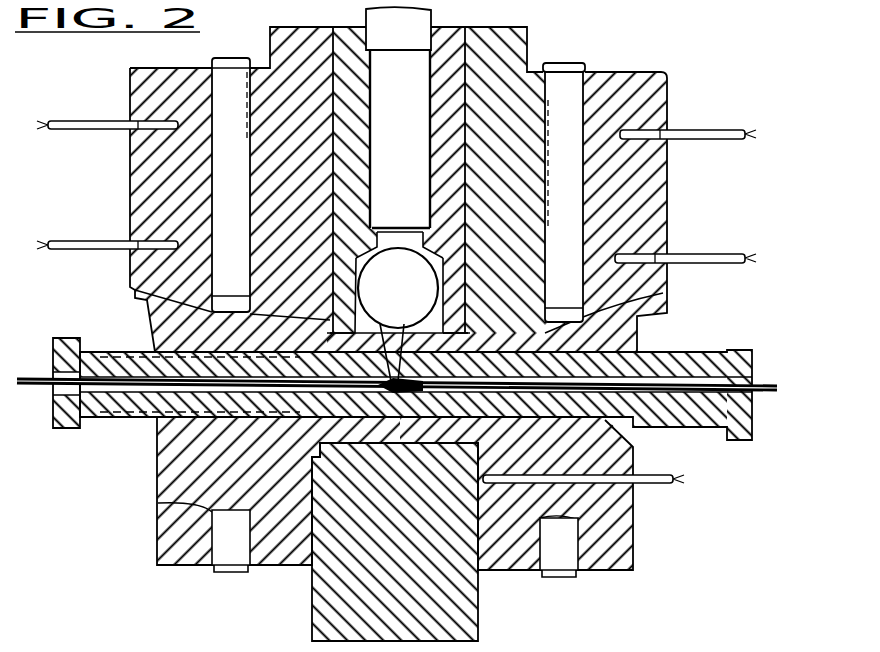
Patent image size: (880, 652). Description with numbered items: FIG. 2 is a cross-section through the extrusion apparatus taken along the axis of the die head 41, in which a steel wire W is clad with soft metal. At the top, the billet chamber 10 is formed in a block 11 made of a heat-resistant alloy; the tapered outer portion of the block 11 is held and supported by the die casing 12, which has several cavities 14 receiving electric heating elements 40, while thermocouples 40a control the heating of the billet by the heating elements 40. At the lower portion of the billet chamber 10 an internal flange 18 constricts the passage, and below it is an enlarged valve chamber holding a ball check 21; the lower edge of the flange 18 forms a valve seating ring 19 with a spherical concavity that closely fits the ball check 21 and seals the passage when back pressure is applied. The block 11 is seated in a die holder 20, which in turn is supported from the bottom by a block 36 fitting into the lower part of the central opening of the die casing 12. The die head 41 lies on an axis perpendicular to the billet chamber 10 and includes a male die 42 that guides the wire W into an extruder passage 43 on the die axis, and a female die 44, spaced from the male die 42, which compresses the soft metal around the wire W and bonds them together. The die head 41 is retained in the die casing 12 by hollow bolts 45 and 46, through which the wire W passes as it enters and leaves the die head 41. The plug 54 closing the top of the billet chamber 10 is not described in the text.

The billet chamber 10 is at (408, 111).
The block 11 is at (357, 163).
The die casing 12 is at (664, 207).
The cavities 14 is at (572, 92).
The internal flange 18 is at (362, 245).
The valve seating ring 19 is at (368, 261).
The die holder 20 is at (408, 438).
The ball check 21 is at (410, 301).
The block 36 is at (408, 554).
The electric heating elements 40 is at (240, 213).
The thermocouples 40a is at (712, 129).
The die head 41 is at (349, 335).
The male die 42 is at (444, 335).
The extruder passage 43 is at (404, 345).
The female die 44 is at (380, 345).
The hollow bolt 45 is at (692, 354).
The hollow bolt 46 is at (62, 403).
The plug 54 is at (402, 45).
The steel wire W is at (768, 400).